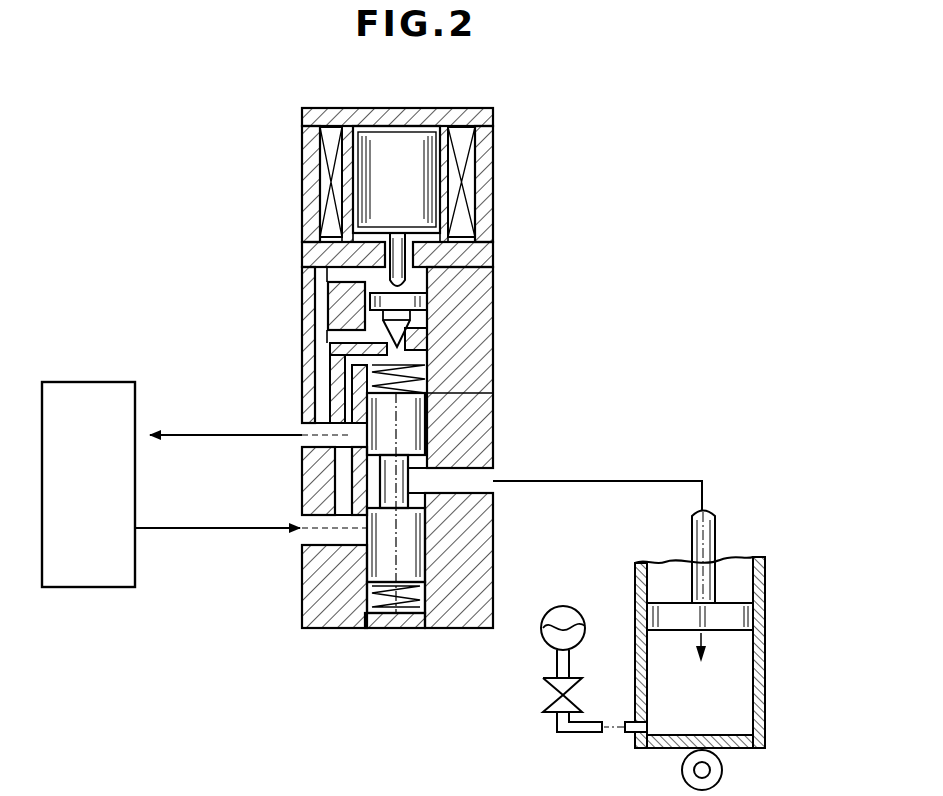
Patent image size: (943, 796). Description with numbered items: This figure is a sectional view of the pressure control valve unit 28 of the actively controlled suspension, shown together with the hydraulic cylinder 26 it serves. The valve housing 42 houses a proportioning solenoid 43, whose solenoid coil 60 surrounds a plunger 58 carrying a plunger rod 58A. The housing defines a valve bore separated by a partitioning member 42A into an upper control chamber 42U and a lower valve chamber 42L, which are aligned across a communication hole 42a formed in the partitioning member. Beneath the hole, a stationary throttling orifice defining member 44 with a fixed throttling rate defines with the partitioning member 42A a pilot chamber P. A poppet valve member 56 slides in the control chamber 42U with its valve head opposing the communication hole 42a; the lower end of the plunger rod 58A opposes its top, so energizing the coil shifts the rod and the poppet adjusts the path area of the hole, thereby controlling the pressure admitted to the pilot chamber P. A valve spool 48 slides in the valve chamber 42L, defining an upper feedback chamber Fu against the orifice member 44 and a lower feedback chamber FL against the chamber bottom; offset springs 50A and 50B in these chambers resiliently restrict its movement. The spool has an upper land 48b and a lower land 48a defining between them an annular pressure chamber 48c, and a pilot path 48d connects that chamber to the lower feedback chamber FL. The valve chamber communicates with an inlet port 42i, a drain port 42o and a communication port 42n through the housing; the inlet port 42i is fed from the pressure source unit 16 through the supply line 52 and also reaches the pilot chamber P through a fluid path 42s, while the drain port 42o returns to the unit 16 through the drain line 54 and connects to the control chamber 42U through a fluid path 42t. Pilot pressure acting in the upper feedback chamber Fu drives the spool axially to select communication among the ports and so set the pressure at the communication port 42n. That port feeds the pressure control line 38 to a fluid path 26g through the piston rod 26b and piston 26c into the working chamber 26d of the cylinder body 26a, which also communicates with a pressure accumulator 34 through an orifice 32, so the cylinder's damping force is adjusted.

The pressure control valve unit 28 is at (410, 384).
The proportioning solenoid 43 is at (493, 158).
The solenoid coil 60 is at (330, 143).
The plunger 58 is at (405, 140).
The plunger rod 58A is at (400, 268).
The valve housing 42 is at (402, 422).
The control chamber 42U is at (352, 264).
The valve chamber 42L is at (430, 395).
The communication hole 42a is at (440, 320).
The partitioning member 42A is at (425, 340).
The throttling orifice defining member 44 is at (425, 356).
The fluid path 42t is at (320, 315).
The drain port 42o is at (312, 430).
The fluid path 42s is at (337, 495).
The inlet port 42i is at (308, 550).
The communication port 42n is at (465, 493).
The poppet valve member 56 is at (372, 300).
The offset spring 50A is at (345, 357).
The offset spring 50B is at (397, 629).
The upper feedback chamber Fu is at (375, 382).
The lower feedback chamber FL is at (362, 629).
The pilot chamber P is at (304, 340).
The valve spool 48 is at (400, 503).
The lower land 48a is at (430, 567).
The upper land 48b is at (427, 427).
The annular pressure chamber 48c is at (420, 462).
The pilot path 48d is at (392, 565).
The hydraulic pressure source unit 16 is at (105, 382).
The pressure drain line 54 is at (165, 435).
The pressure supply line 52 is at (167, 528).
The pressure control line 38 is at (650, 481).
The hydraulic cylinder 26 is at (697, 637).
The cylinder body 26a is at (762, 672).
The piston rod 26b is at (715, 522).
The piston 26c is at (645, 612).
The working chamber 26d is at (750, 721).
The fluid path 26g is at (718, 536).
The pressure accumulator 34 is at (545, 644).
The orifice 32 is at (548, 705).